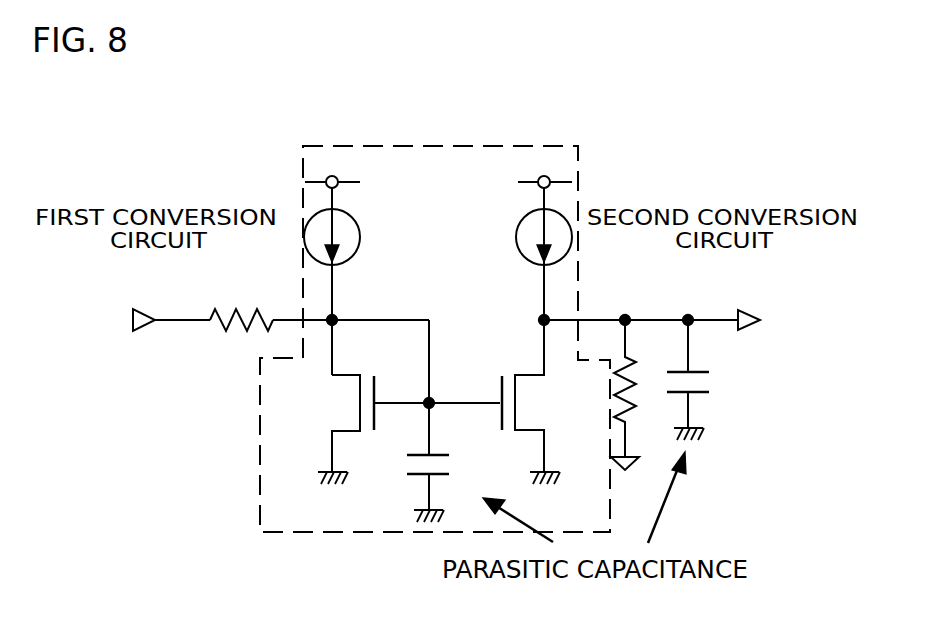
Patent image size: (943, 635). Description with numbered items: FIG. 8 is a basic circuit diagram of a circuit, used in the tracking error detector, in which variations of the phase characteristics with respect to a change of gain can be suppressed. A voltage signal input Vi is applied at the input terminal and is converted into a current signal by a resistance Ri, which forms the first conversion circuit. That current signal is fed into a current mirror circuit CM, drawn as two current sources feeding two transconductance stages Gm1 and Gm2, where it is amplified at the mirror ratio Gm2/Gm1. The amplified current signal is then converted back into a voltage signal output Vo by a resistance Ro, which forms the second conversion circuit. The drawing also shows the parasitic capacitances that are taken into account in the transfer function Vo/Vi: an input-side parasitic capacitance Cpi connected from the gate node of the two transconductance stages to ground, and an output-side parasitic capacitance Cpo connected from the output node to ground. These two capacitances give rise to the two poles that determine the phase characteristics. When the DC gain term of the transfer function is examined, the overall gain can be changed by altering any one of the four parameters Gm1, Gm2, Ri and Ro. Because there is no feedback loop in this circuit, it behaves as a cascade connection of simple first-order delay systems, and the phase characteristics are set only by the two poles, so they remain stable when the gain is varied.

The current mirror circuit CM is at (578, 172).
The voltage signal input Vi is at (142, 295).
The resistance (first conversion circuit) Ri is at (241, 300).
The transconductance of the current mirror input side Gm1 is at (321, 429).
The transconductance of the current mirror output side Gm2 is at (555, 402).
The input parasitic capacitance Cpi is at (455, 462).
The resistance (second conversion circuit) Ro is at (621, 371).
The output parasitic capacitance Cpo is at (719, 380).
The voltage signal output Vo is at (750, 297).